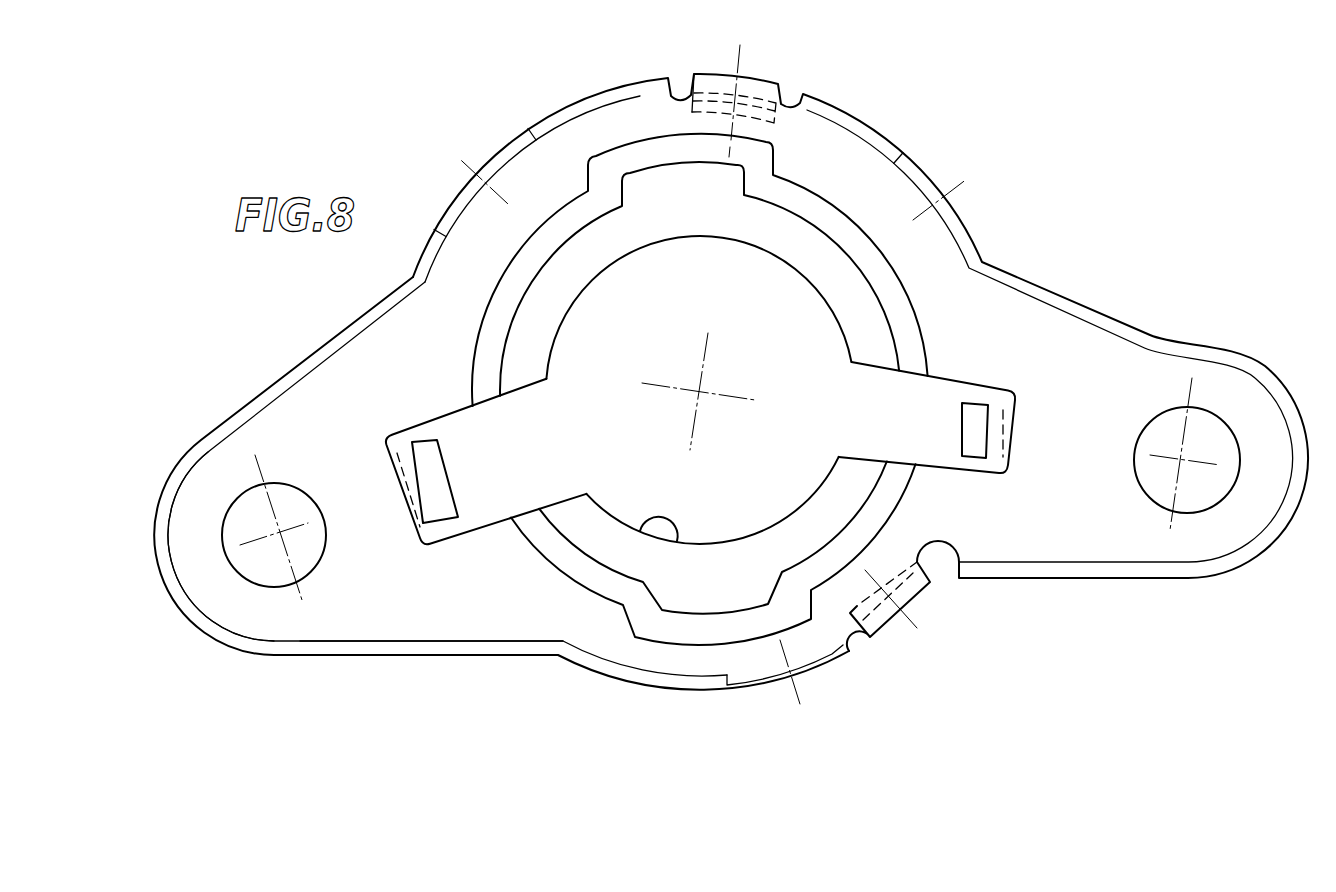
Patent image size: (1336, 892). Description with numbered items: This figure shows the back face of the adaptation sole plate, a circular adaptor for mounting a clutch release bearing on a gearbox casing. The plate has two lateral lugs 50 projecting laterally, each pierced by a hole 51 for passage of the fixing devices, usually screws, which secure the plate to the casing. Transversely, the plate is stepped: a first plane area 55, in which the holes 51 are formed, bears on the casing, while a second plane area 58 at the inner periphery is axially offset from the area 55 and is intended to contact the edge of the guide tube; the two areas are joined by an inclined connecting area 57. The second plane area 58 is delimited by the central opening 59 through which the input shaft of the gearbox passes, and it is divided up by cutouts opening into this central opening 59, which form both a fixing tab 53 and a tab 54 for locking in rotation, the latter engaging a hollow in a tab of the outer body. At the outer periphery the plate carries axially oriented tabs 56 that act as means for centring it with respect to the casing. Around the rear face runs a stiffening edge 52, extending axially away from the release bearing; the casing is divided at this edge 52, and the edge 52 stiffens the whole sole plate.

The lug 50 is at (1100, 364).
The hole 51 is at (232, 513).
The stiffening edge 52 is at (449, 652).
The fixing tab 53 is at (886, 640).
The tab for locking in rotation 54 is at (975, 443).
The first plane area 55 is at (363, 597).
The centring tabs 56 is at (497, 152).
The inclined connecting area 57 is at (600, 572).
The second plane area 58 is at (753, 585).
The central opening 59 is at (678, 542).